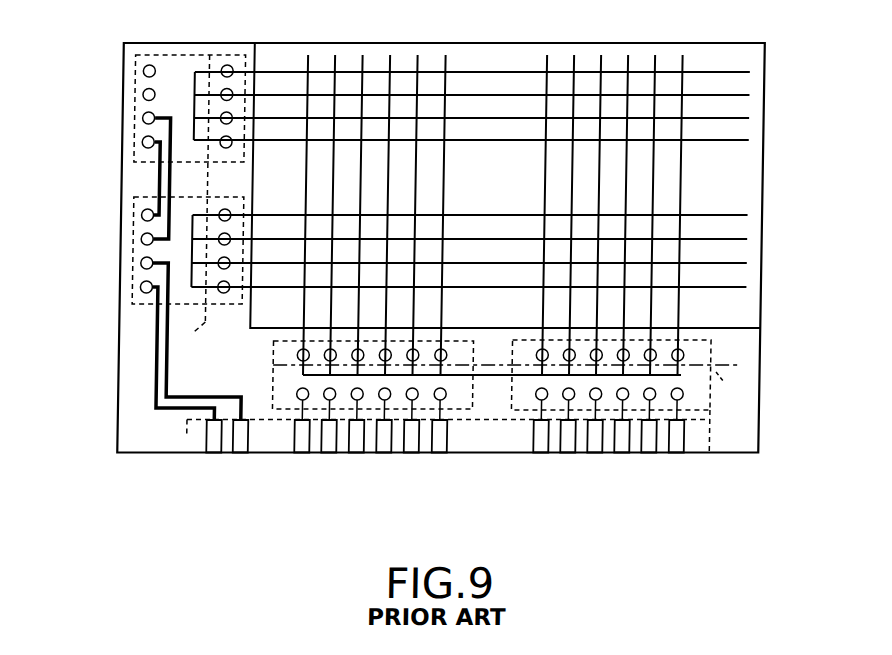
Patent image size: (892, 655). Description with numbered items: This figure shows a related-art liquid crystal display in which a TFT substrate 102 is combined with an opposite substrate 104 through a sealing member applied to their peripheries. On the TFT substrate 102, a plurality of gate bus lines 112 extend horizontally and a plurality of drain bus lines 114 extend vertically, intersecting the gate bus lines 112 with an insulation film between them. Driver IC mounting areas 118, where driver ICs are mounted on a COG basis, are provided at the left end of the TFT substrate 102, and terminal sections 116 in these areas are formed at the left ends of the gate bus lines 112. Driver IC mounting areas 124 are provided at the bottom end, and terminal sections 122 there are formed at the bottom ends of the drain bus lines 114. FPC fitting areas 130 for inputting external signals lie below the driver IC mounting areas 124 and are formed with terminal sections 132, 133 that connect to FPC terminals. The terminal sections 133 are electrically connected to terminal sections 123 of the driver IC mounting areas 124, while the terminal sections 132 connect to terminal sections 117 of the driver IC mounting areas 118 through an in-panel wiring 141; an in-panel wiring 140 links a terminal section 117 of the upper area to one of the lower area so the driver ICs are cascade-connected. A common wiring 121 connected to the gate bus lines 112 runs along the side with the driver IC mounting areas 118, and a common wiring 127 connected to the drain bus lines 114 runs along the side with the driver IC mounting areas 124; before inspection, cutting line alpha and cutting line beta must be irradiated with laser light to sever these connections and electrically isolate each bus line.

The TFT substrate 102 is at (766, 375).
The opposite substrate 104 is at (766, 278).
The gate bus lines 112 is at (718, 141).
The drain bus lines 114 is at (446, 190).
The terminal sections 116 is at (235, 303).
The terminal sections 117 is at (144, 142).
The driver IC mounting areas 118 is at (176, 52).
The common wiring 121 is at (195, 179).
The terminal sections 122 is at (452, 348).
The terminal sections 123 is at (303, 394).
The driver IC mounting areas 124 is at (470, 420).
The common wiring 127 is at (506, 376).
The FPC fitting areas 130 is at (194, 437).
The terminal sections 132 is at (246, 453).
The terminal sections 133 is at (309, 453).
The in-panel wiring 140 is at (162, 185).
The in-panel wiring 141 is at (162, 374).